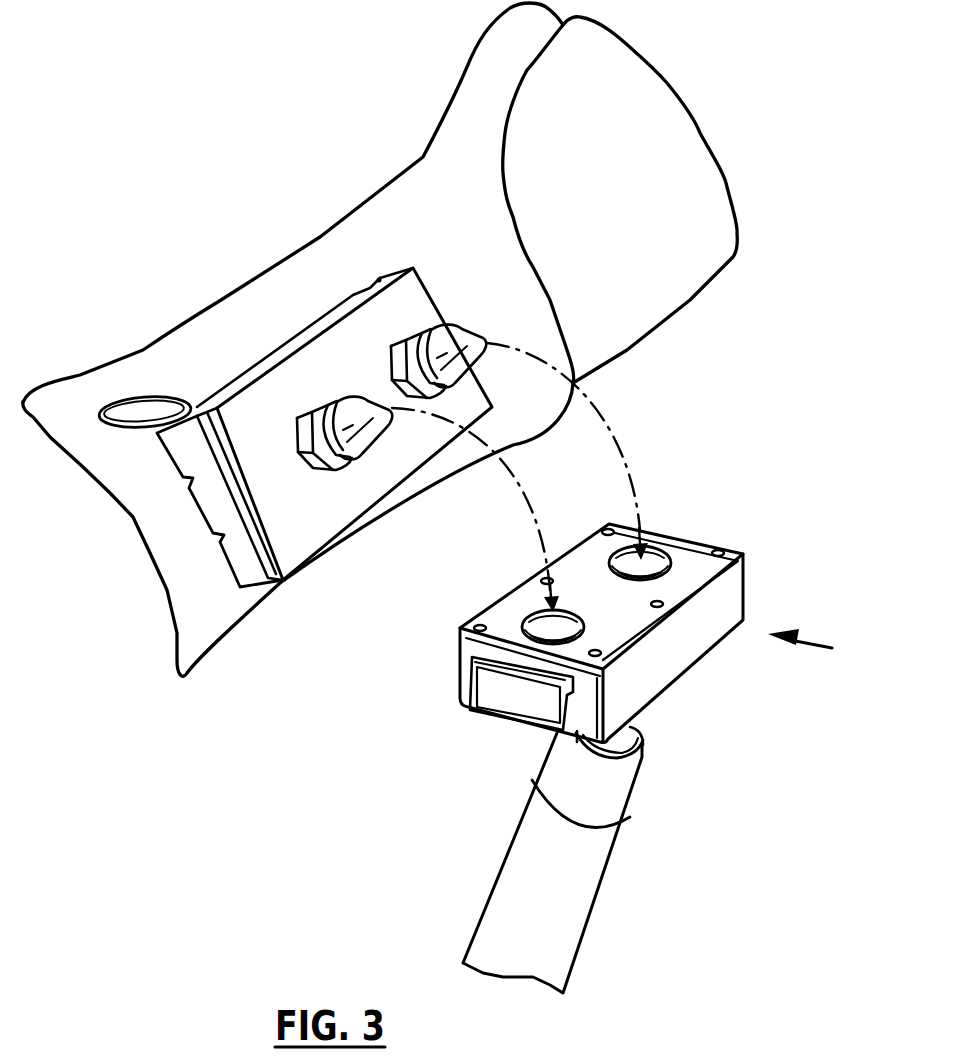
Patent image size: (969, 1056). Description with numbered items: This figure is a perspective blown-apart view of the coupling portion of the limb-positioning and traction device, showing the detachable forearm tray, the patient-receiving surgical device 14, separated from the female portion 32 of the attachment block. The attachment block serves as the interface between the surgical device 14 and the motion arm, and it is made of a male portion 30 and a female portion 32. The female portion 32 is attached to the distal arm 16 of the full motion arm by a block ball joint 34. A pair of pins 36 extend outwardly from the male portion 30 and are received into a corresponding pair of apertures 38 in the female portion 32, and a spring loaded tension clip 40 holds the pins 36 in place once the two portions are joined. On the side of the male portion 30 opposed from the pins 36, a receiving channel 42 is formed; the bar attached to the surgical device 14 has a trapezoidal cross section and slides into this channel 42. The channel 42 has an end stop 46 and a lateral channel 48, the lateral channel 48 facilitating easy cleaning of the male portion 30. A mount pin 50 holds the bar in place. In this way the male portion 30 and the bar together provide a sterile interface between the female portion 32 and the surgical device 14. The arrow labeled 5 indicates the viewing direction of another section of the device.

The viewing direction arrow for FIG. 5 is at (812, 648).
The surgical device 14 is at (430, 173).
The distal arm 16 is at (593, 879).
The male portion 30 is at (332, 520).
The female portion 32 is at (697, 548).
The block ball joint 34 is at (627, 727).
The pins 36 is at (367, 437).
The apertures 38 is at (655, 555).
The spring loaded tension clip 40 is at (520, 703).
The receiving channel 42 is at (200, 500).
The end stop 46 is at (363, 288).
The lateral channel 48 is at (377, 281).
The mount pin 50 is at (138, 397).